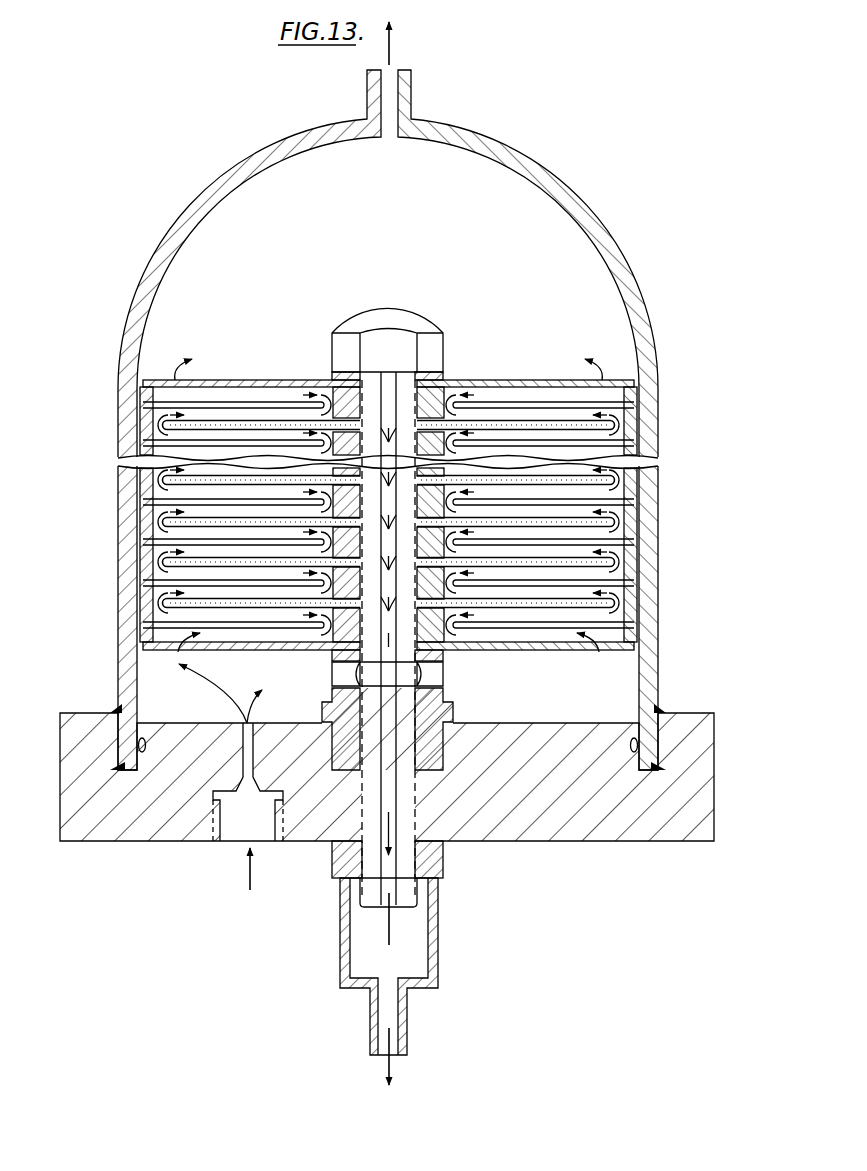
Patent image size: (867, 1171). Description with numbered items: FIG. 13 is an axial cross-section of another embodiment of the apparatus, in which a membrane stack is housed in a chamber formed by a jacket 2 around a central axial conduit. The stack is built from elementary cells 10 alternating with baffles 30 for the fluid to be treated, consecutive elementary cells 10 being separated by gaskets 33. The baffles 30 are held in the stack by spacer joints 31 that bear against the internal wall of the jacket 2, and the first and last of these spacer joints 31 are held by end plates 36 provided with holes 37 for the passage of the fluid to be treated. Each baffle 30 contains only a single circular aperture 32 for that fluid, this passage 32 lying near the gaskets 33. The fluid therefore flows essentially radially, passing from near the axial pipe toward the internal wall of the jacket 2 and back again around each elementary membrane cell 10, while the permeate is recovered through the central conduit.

The jacket 2 is at (646, 515).
The elementary cell 10 is at (613, 420).
The baffle 30 is at (625, 588).
The spacer joint 31 is at (630, 558).
The circular aperture 32 is at (455, 433).
The gasket 33 is at (458, 382).
The end plate 36 is at (518, 383).
The hole 37 is at (387, 771).